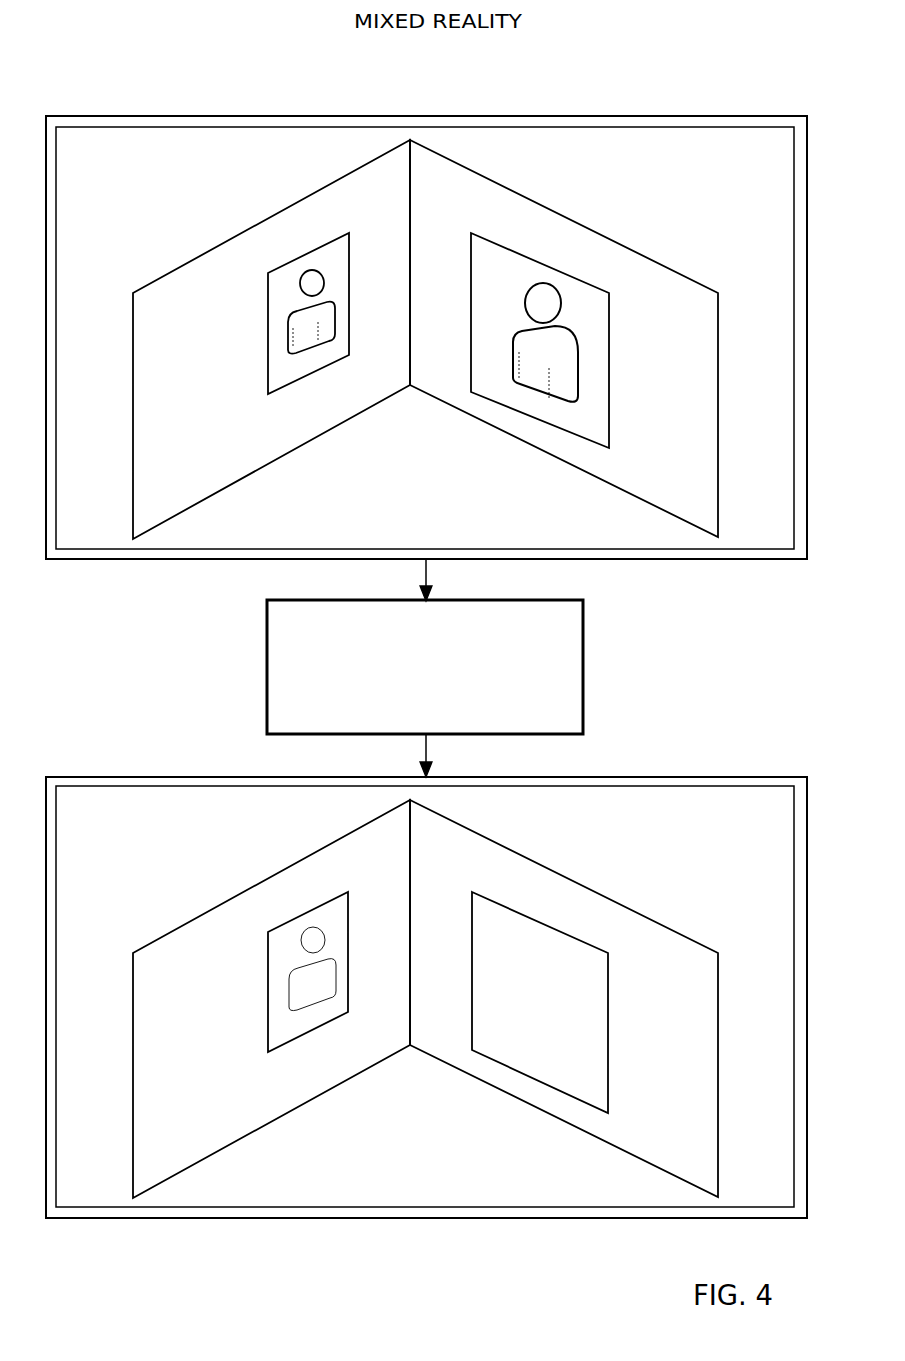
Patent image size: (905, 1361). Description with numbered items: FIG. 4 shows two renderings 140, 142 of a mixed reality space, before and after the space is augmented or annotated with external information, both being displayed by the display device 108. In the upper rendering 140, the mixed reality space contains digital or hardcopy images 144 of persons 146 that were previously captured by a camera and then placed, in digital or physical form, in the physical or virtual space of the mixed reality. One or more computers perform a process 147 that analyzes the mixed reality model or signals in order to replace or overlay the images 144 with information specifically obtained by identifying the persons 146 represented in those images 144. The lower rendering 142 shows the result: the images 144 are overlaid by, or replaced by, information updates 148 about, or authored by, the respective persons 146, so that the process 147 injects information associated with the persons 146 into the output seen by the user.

The display device 108 is at (65, 116).
The rendering 140 is at (162, 127).
The rendering 142 is at (160, 786).
The images 144 is at (287, 268).
The persons 146 is at (313, 270).
The process 147 is at (266, 640).
The information updates 148 is at (508, 1032).